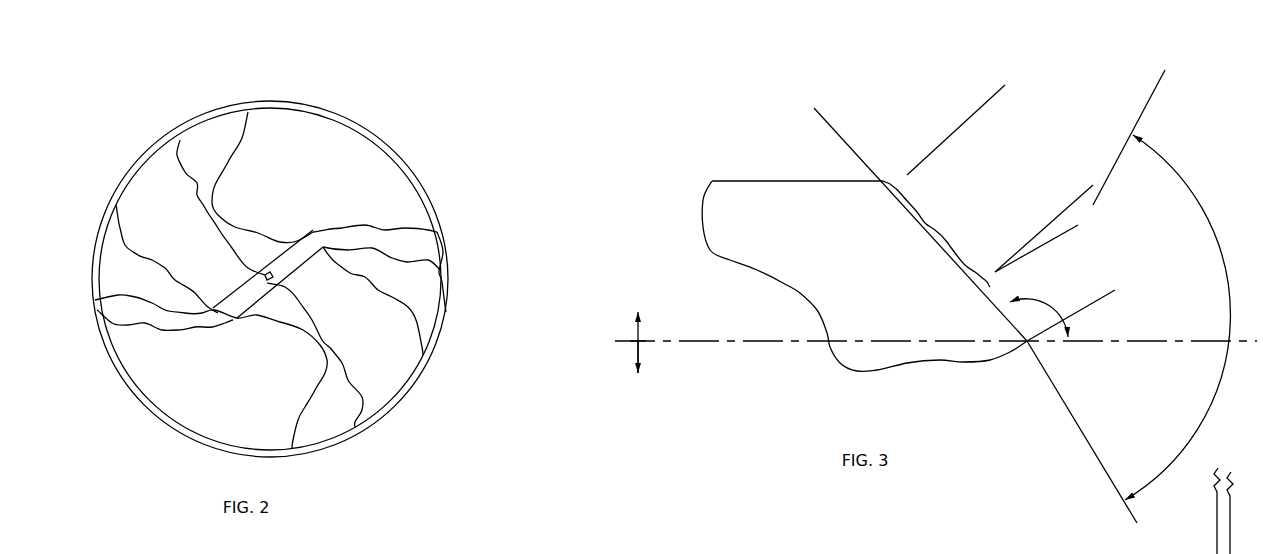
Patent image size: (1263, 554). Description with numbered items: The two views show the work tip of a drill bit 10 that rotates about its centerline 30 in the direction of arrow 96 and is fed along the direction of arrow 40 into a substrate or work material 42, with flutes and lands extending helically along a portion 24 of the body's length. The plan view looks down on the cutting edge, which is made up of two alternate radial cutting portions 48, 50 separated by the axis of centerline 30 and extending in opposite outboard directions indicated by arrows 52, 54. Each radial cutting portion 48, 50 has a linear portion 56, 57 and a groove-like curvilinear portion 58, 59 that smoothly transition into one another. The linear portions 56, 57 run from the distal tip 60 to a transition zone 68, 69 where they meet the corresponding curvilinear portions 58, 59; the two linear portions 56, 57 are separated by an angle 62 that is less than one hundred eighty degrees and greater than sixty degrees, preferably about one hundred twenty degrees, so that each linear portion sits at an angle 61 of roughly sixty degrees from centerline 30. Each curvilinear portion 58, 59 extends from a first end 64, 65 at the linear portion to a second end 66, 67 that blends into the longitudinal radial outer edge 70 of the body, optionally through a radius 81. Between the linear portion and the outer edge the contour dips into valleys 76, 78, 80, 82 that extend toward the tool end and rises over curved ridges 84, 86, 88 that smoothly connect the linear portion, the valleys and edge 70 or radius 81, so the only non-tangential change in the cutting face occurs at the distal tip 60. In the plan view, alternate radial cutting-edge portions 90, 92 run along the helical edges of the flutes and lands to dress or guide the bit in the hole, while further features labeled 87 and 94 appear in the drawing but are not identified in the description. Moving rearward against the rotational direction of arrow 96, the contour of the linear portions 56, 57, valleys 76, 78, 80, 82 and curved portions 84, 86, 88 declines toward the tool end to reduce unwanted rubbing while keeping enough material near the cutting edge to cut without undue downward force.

In FIG. 3, the bit 10 is at (622, 540).
In FIG. 3, the portion of longitudinal length 24 is at (961, 553).
In FIG. 2, the centerline 30 is at (270, 277).
In FIG. 3, the centerline 30 is at (787, 343).
In FIG. 3, the arrow indicating longitudinal direction 40 is at (1080, 553).
In FIG. 3, the work material 42 is at (1222, 512).
In FIG. 2, the radial cutting portion 48 is at (352, 178).
In FIG. 2, the radial cutting portion 50 is at (177, 368).
In FIG. 3, the arrow indicating outboard direction 52 is at (635, 331).
In FIG. 3, the arrow indicating outboard direction 54 is at (628, 369).
In FIG. 2, the linear portion 56 is at (298, 262).
In FIG. 3, the linear portion 56 is at (1065, 261).
In FIG. 2, the linear portion 57 is at (235, 320).
In FIG. 3, the linear portion 57 is at (1067, 232).
In FIG. 2, the curvilinear portion 58 is at (376, 202).
In FIG. 3, the curvilinear portion 58 is at (1000, 178).
In FIG. 2, the curvilinear portion 59 is at (138, 330).
In FIG. 3, the curvilinear portion 59 is at (963, 123).
In FIG. 3, the distal tip 60 is at (1027, 345).
In FIG. 3, the angle 61 is at (1060, 318).
In FIG. 3, the angle 62 is at (1128, 296).
In FIG. 3, the first end 64 is at (929, 287).
In FIG. 3, the first end 65 is at (973, 283).
In FIG. 3, the second end 66 is at (849, 214).
In FIG. 3, the second end 67 is at (881, 196).
In FIG. 2, the transition zone 68 is at (308, 223).
In FIG. 3, the transition zone 68 is at (943, 302).
In FIG. 2, the transition zone 69 is at (217, 338).
In FIG. 3, the transition zone 69 is at (982, 288).
In FIG. 3, the longitudinal radial outer edge 70 is at (724, 180).
In FIG. 3, the valley 76 is at (995, 235).
In FIG. 3, the valley 78 is at (948, 194).
In FIG. 3, the valley 80 is at (970, 267).
In FIG. 3, the radius 81 is at (881, 182).
In FIG. 3, the valley 82 is at (927, 220).
In FIG. 3, the curved ridge 84 is at (990, 289).
In FIG. 3, the curved ridge 86 is at (945, 236).
In FIG. 2, the margin 87 is at (425, 210).
In FIG. 3, the margin 87 is at (902, 196).
In FIG. 2, the curved ridge 88 is at (447, 313).
In FIG. 2, the radial cutting-edge portion 90 is at (93, 253).
In FIG. 2, the radial cutting-edge portion 92 is at (142, 352).
In FIG. 2, the land 94 is at (303, 128).
In FIG. 2, the arrow indicating rotational direction 96 is at (90, 148).